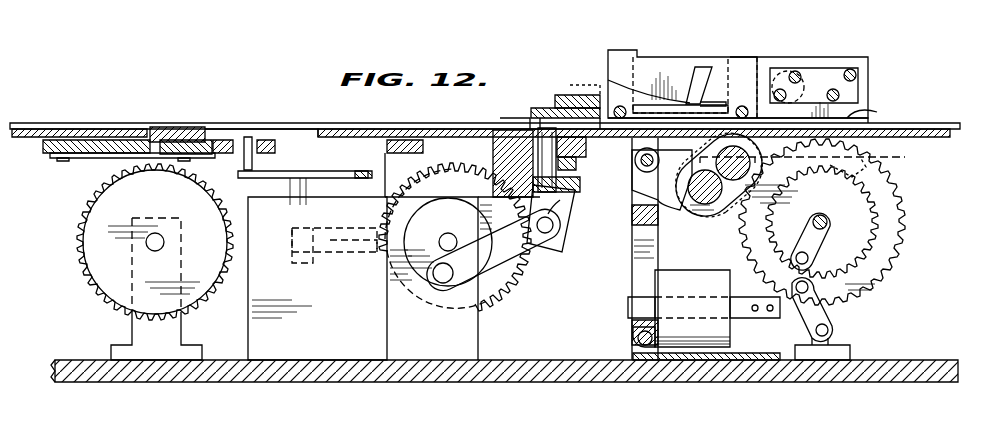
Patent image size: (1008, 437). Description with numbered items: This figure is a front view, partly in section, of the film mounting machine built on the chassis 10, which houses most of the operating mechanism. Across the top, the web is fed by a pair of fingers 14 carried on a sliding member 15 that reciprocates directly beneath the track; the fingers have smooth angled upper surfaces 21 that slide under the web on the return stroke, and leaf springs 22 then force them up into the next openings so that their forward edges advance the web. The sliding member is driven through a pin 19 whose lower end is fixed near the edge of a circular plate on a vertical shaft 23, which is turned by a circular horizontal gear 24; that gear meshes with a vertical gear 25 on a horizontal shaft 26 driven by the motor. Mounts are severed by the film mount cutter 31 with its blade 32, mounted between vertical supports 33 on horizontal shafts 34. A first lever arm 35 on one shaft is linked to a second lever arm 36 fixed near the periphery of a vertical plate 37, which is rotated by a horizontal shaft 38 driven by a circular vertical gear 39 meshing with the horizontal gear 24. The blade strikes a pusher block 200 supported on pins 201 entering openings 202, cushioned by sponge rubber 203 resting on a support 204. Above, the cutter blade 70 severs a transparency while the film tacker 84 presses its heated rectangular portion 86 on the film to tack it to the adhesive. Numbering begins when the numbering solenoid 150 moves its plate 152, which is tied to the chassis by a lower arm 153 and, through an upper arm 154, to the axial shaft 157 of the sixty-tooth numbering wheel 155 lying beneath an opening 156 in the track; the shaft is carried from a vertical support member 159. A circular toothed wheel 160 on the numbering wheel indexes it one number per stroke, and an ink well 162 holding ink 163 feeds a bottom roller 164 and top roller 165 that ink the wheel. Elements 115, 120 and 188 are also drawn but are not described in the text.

The chassis 10 is at (892, 358).
The fingers 14 is at (157, 127).
The sliding member 15 is at (41, 130).
The pin 19 is at (258, 162).
The angled upper surfaces 21 is at (178, 128).
The leaf springs 22 is at (106, 160).
The vertical shaft 23 is at (318, 214).
The circular horizontal gear 24 is at (336, 258).
The vertical gear 25 is at (98, 230).
The horizontal shaft 26 is at (152, 239).
The film mount cutter 31 is at (570, 96).
The blade 32 is at (546, 108).
The vertical supports 33 is at (622, 6).
The horizontal shafts 34 is at (568, 8).
The first lever arm 35 is at (564, 232).
The second lever arm 36 is at (512, 279).
The vertical plate 37 is at (422, 278).
The horizontal shaft 38 is at (449, 234).
The circular vertical gear 39 is at (496, 306).
The cutter blade 70 is at (640, 62).
The film tacker 84 is at (742, 72).
The rectangular portion 86 is at (697, 68).
The shelf 115 is at (302, 178).
The support 120 is at (360, 176).
The numbering solenoid 150 is at (655, 288).
The plate 152 is at (816, 285).
The lower arm 153 is at (830, 307).
The upper arm 154 is at (800, 230).
The numbering wheel 155 is at (902, 190).
The opening 156 is at (866, 120).
The axial shaft 157 is at (838, 215).
The vertical support member 159 is at (656, 148).
The circular toothed wheel 160 is at (896, 241).
The ink well 162 is at (712, 236).
The ink 163 is at (694, 212).
The bottom roller 164 is at (692, 178).
The top roller 165 is at (814, 152).
The block 188 is at (578, 172).
The pusher block 200 is at (584, 156).
The pins 201 is at (545, 194).
The openings 202 is at (520, 128).
The sponge rubber 203 is at (582, 189).
The support 204 is at (584, 207).